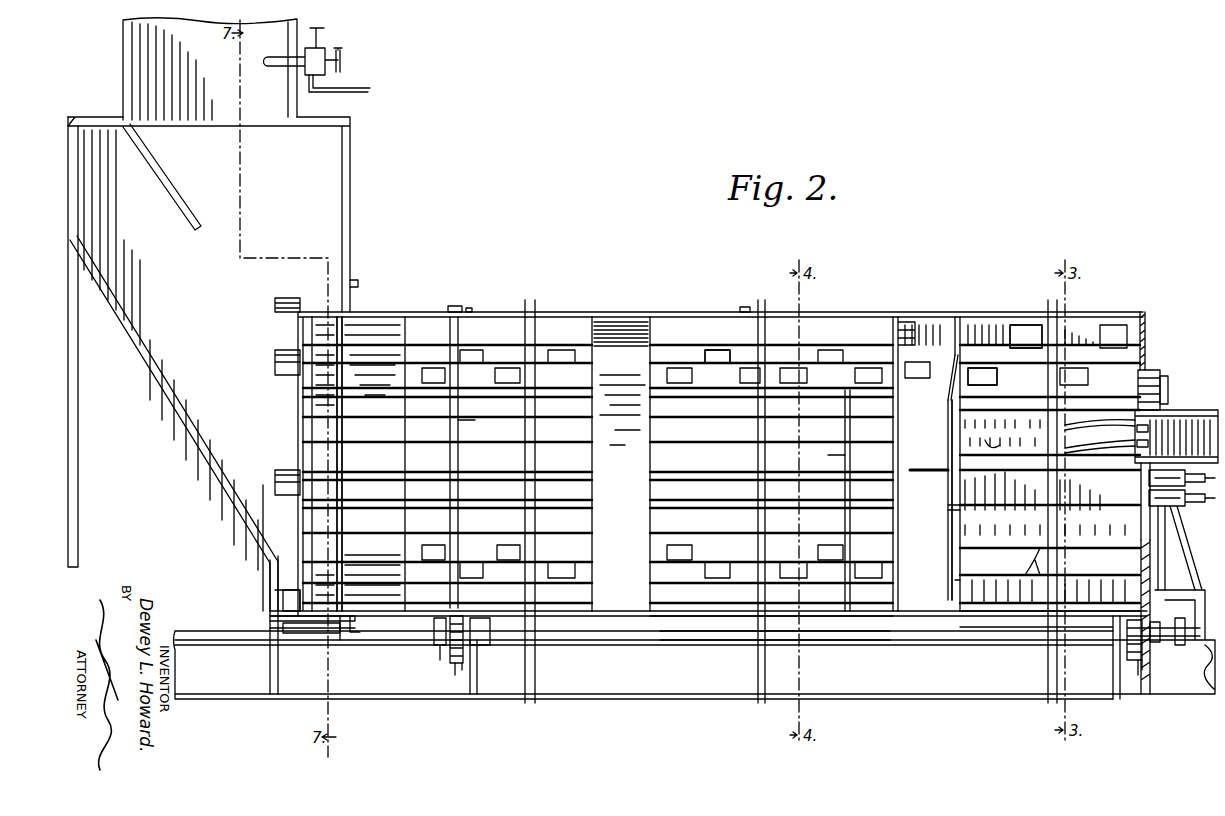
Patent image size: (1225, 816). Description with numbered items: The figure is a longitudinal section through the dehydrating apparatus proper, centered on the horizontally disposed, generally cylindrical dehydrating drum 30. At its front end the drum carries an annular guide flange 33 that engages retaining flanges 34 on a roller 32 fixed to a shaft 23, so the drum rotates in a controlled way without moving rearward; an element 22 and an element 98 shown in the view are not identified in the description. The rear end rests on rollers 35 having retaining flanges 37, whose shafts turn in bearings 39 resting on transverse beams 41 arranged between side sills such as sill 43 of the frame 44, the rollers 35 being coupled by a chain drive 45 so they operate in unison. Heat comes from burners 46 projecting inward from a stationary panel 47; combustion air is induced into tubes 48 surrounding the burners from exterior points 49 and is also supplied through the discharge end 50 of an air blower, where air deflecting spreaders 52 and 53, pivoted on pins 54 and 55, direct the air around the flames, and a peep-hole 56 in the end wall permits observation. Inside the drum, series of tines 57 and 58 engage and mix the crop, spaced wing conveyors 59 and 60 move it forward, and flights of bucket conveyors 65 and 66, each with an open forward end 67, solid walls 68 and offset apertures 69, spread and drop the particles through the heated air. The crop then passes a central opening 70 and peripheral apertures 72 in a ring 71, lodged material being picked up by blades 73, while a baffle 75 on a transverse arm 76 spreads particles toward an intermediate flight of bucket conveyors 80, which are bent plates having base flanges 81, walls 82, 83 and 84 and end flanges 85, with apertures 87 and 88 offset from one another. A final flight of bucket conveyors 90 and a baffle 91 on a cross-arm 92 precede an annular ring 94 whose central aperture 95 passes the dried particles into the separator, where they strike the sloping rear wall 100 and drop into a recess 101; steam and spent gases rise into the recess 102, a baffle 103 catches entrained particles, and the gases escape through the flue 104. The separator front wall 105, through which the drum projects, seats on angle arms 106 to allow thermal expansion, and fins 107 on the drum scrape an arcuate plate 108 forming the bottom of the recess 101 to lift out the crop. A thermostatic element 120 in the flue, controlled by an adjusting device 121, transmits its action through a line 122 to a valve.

The sprocket gear 22 is at (1148, 648).
The shaft 23 is at (1090, 632).
The dehydrating drum 30 is at (646, 310).
The roller 32 is at (1142, 672).
The annular guide flange 33 is at (1152, 312).
The retaining flanges 34 is at (1128, 655).
The rollers 35 is at (452, 660).
The retaining flanges 37 is at (458, 672).
The bearings 39 is at (495, 650).
The transverse beams 41 is at (480, 665).
The side sill 43 is at (628, 702).
The frame 44 is at (268, 700).
The chain drive 45 is at (436, 648).
The burners 46 is at (1200, 505).
The stationary panel 47 is at (1138, 380).
The tubes 48 is at (1150, 488).
The exterior air induction points 49 is at (1200, 520).
The discharge end 50 is at (1168, 410).
The air deflecting spreader 52 is at (1108, 410).
The air deflecting spreader 53 is at (1115, 448).
The pin 54 is at (1148, 428).
The pin 55 is at (1148, 444).
The peep-hole 56 is at (1176, 386).
The tines 57 is at (1008, 448).
The tines 58 is at (1000, 428).
The wing conveyors 59 is at (1030, 575).
The wing conveyors 60 is at (990, 525).
The bucket conveyors 65 is at (948, 510).
The bucket conveyors 66 is at (950, 405).
The open forward end 67 is at (952, 540).
The solid walls 68 is at (1110, 545).
The apertures 69 is at (975, 575).
The central opening 70 is at (948, 388).
The ring 71 is at (955, 372).
The apertures 72 is at (950, 330).
The blades 73 is at (934, 468).
The baffle 75 is at (850, 435).
The transverse arm 76 is at (838, 460).
The bucket conveyors 80 is at (648, 512).
The base flanges 81 is at (675, 612).
The walls 82 is at (746, 306).
The walls 83 is at (790, 340).
The walls 84 is at (658, 372).
The end flanges 85 is at (655, 385).
The apertures 87 is at (712, 350).
The apertures 88 is at (740, 375).
The final flight of bucket conveyors 90 is at (407, 445).
The baffle 91 is at (462, 432).
The cross-arm 92 is at (450, 462).
The annular ring 94 is at (344, 590).
The central aperture 95 is at (342, 560).
The bracket 98 is at (462, 298).
The sloping rear wall 100 is at (195, 438).
The recess 101 is at (282, 607).
The recess 102 is at (188, 325).
The baffle 103 is at (195, 197).
The flue 104 is at (135, 57).
The front wall 105 is at (352, 258).
The angle arms 106 is at (360, 626).
The fins 107 is at (274, 304).
The arcuate plate 108 is at (325, 640).
The thermostatic element 120 is at (335, 80).
The adjusting device 121 is at (350, 42).
The line 122 is at (362, 94).